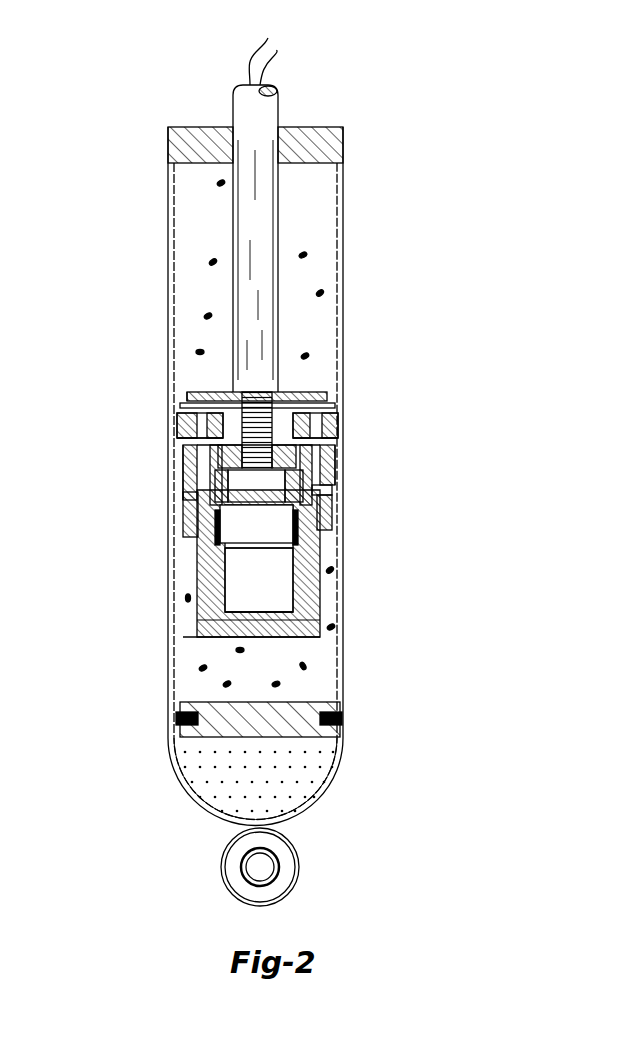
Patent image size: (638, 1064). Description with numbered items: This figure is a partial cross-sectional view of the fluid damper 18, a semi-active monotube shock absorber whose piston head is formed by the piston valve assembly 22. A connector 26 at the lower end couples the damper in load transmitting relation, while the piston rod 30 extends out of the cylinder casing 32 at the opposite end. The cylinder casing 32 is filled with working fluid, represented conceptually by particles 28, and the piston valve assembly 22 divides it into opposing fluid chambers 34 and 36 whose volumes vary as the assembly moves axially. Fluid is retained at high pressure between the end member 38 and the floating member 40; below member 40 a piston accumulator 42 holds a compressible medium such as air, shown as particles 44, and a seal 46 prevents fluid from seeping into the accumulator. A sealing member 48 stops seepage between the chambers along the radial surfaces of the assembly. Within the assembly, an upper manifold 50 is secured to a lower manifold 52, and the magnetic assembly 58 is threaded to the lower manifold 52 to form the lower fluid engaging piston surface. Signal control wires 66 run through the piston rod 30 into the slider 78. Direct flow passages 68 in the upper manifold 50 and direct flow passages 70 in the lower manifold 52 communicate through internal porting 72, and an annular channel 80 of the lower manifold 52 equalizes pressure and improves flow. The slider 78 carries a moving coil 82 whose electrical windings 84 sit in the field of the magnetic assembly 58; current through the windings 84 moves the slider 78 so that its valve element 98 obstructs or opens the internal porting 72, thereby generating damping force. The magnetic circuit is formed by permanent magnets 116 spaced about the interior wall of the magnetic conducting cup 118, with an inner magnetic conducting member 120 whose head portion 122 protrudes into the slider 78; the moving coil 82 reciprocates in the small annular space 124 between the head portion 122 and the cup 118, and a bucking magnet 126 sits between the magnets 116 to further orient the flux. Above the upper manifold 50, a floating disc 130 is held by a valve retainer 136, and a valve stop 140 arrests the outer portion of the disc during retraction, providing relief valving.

The fluid damper 18 is at (131, 314).
The piston valve assembly 22 is at (175, 463).
The connector 26 is at (300, 868).
The particles 28 is at (321, 192).
The piston rod 30 is at (278, 108).
The cylinder casing 32 is at (343, 282).
The fluid chamber 34 is at (221, 250).
The fluid chamber 36 is at (291, 672).
The member 38 is at (343, 148).
The member 40 is at (202, 700).
The piston accumulator 42 is at (299, 785).
The particles 44 is at (202, 803).
The seal 46 is at (176, 718).
The sealing member 48 is at (176, 422).
The upper manifold 50 is at (176, 437).
The lower manifold 52 is at (182, 530).
The magnetic assembly 58 is at (325, 597).
The signal control wires 66 is at (258, 40).
The direct flow passages 68 is at (236, 382).
The direct flow passages 70 is at (317, 470).
The internal porting 72 is at (302, 444).
The slider 78 is at (282, 480).
The annular channel 80 is at (325, 488).
The moving coil 82 is at (286, 548).
The electrical windings 84 is at (305, 530).
The valve element 98 is at (210, 458).
The permanent magnets 116 is at (317, 612).
The magnetic conducting cup 118 is at (197, 633).
The inner magnetic conducting member 120 is at (277, 605).
The head portion 122 is at (280, 538).
The annular space 124 is at (197, 560).
The bucking magnet 126 is at (280, 620).
The floating disc 130 is at (330, 402).
The valve retainer 136 is at (343, 378).
The valve stop 140 is at (189, 392).